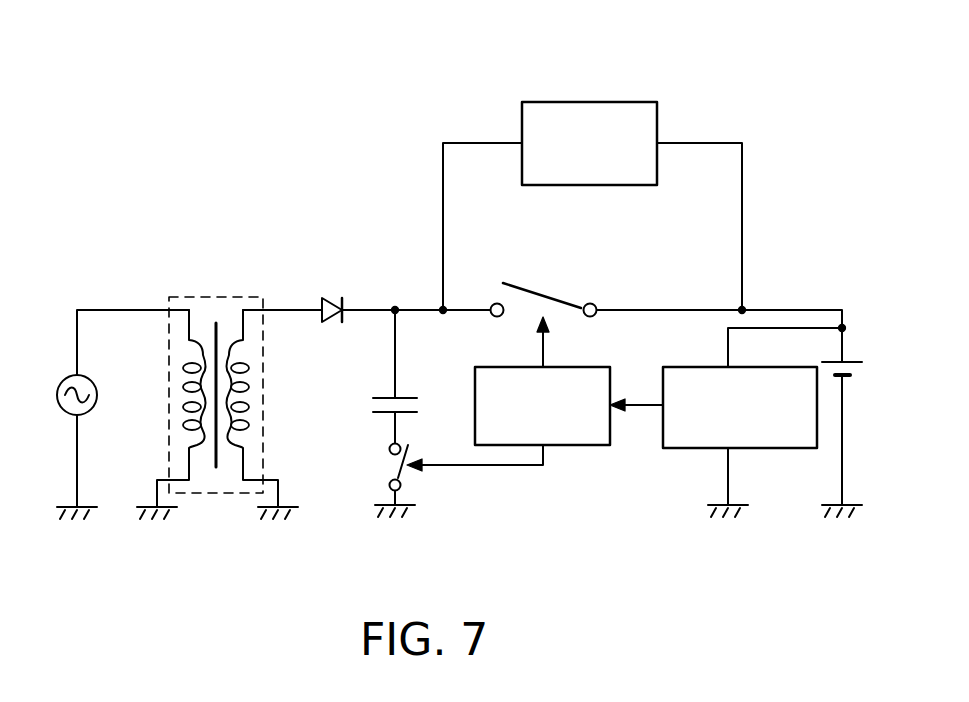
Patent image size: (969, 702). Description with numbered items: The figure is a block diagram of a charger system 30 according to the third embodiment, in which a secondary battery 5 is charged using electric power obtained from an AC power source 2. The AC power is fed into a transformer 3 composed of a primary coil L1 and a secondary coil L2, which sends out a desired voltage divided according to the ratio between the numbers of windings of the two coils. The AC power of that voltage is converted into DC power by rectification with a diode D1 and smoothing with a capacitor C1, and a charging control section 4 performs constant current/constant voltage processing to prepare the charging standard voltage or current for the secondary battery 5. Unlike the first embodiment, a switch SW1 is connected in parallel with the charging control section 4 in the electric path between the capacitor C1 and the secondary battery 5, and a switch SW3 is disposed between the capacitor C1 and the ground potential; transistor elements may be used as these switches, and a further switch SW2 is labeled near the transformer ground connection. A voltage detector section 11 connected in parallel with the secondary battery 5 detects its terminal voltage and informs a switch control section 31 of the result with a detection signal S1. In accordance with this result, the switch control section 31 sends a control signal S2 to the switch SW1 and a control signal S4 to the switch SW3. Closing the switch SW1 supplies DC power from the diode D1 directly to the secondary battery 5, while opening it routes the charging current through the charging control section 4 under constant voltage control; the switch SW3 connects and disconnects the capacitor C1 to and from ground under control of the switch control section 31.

The AC power source 2 is at (58, 381).
The transformer 3 is at (226, 373).
The charger system 30 is at (270, 196).
The primary coil L1 is at (178, 377).
The secondary coil L2 is at (255, 391).
The diode D1 is at (335, 297).
The capacitor C1 is at (407, 397).
The switch SW1 is at (550, 295).
The switch SW2 is at (291, 549).
The switch SW3 is at (385, 461).
The charging control section 4 is at (587, 102).
The switch control section 31 is at (603, 448).
The voltage detector section 11 is at (770, 450).
The secondary battery 5 is at (846, 356).
The detection signal S1 is at (643, 408).
The control signal S2 is at (545, 353).
The control signal S4 is at (522, 467).